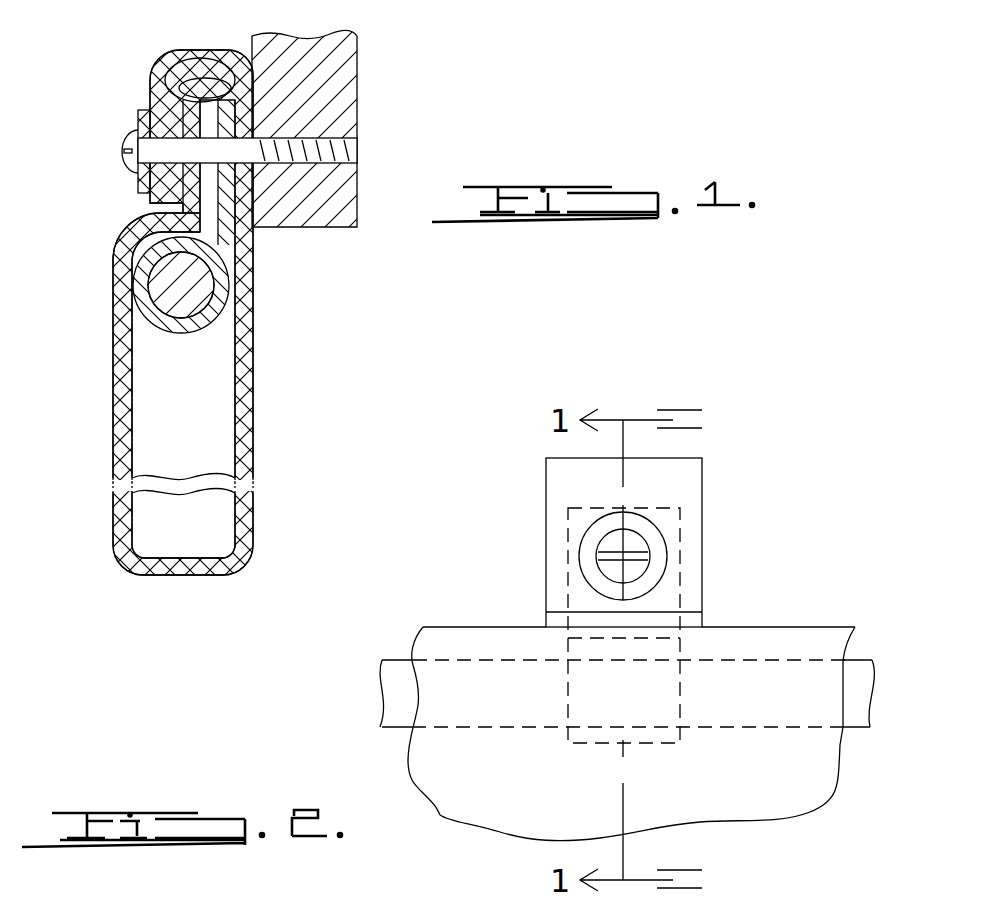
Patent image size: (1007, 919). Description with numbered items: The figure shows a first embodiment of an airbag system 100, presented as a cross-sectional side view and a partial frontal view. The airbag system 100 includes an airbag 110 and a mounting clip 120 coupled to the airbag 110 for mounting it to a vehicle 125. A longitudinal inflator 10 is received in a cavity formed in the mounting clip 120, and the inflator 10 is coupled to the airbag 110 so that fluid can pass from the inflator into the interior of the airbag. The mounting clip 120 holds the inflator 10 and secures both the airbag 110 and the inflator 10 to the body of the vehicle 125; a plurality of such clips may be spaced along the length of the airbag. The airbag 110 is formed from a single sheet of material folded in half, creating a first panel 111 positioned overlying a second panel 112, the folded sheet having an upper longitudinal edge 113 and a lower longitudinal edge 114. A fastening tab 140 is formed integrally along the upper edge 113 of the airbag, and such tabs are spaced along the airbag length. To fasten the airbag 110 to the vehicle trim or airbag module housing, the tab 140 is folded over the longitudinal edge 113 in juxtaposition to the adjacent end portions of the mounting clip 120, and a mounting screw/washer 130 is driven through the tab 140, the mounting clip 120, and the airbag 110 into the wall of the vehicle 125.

In FIG. 1, the longitudinal inflator 10 is at (182, 253).
In FIG. 2, the longitudinal inflator 10 is at (401, 716).
In FIG. 1, the airbag system 100 is at (62, 331).
In FIG. 2, the airbag system 100 is at (814, 866).
In FIG. 1, the airbag 110 is at (266, 521).
In FIG. 2, the airbag 110 is at (762, 615).
In FIG. 1, the first panel 111 is at (122, 428).
In FIG. 2, the first panel 111 is at (490, 783).
In FIG. 1, the second panel 112 is at (245, 439).
In FIG. 1, the upper longitudinal edge 113 is at (127, 95).
In FIG. 1, the lower longitudinal edge 114 is at (246, 578).
In FIG. 1, the mounting clip 120 is at (223, 325).
In FIG. 2, the mounting clip 120 is at (562, 588).
In FIG. 1, the vehicle 125 is at (292, 53).
In FIG. 1, the mounting screw/washer 130 is at (134, 203).
In FIG. 2, the mounting screw/washer 130 is at (679, 554).
In FIG. 1, the fastening tab 140 is at (176, 60).